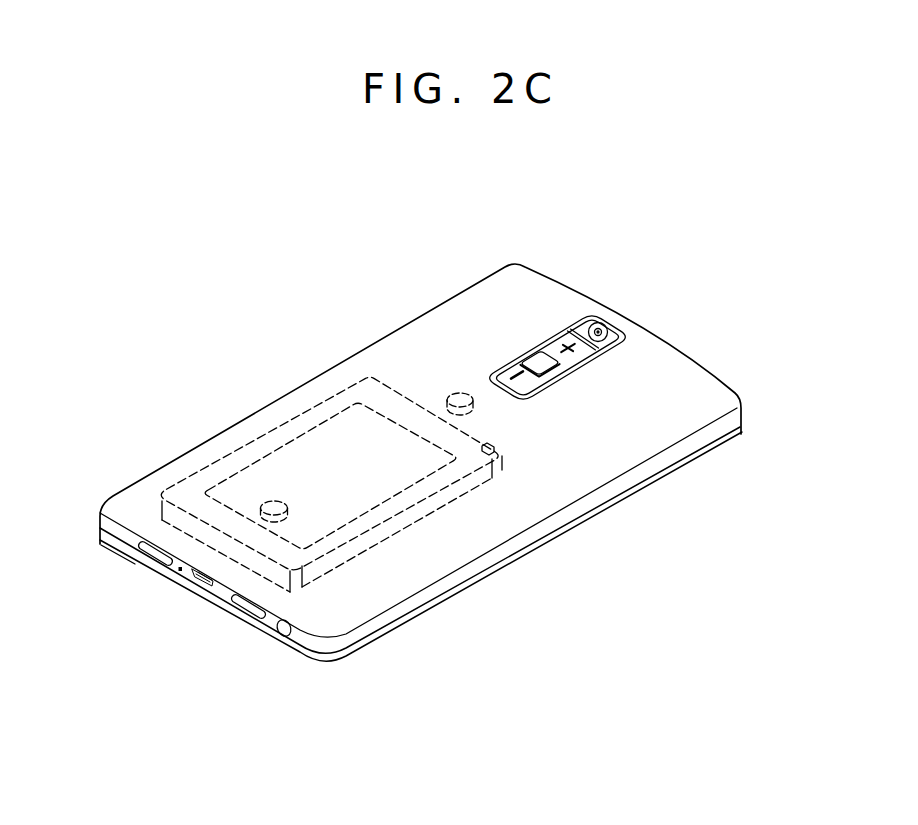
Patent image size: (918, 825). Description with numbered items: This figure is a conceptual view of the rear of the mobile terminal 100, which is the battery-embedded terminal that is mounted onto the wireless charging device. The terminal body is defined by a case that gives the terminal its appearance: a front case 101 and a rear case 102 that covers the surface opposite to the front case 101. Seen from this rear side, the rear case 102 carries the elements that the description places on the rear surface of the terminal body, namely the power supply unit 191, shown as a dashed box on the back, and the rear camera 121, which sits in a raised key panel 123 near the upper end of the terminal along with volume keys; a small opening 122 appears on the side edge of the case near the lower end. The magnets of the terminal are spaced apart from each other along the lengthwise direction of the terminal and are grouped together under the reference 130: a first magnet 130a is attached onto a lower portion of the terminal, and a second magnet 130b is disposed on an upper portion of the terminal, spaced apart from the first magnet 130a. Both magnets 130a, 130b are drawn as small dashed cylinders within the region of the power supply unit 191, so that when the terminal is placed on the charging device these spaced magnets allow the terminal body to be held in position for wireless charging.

The mobile terminal 100 is at (451, 456).
The front case 101 is at (739, 428).
The rear case 102 is at (739, 413).
The rear camera 121 is at (603, 327).
The microphone 122 is at (178, 572).
The user input unit 123 is at (553, 343).
The antenna contact terminals 130 is at (281, 410).
The first magnet 130a is at (266, 507).
The second magnet 130b is at (372, 360).
The power supply unit 191 is at (397, 534).